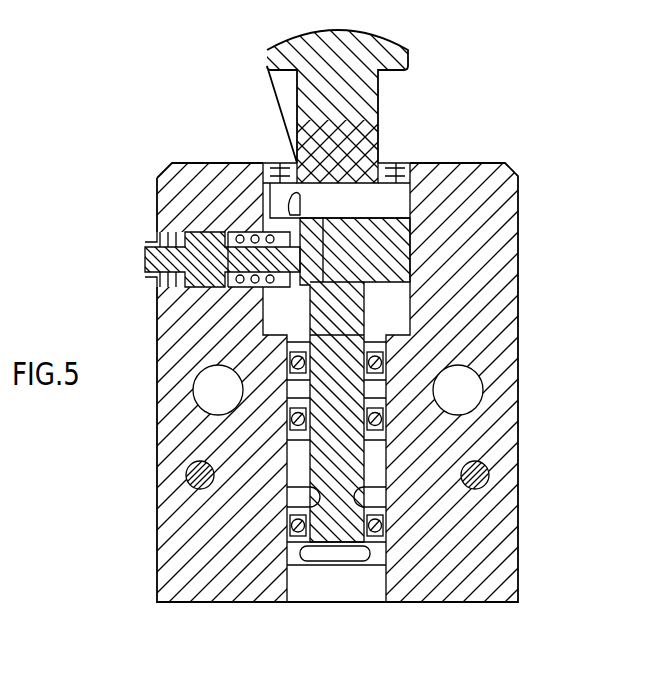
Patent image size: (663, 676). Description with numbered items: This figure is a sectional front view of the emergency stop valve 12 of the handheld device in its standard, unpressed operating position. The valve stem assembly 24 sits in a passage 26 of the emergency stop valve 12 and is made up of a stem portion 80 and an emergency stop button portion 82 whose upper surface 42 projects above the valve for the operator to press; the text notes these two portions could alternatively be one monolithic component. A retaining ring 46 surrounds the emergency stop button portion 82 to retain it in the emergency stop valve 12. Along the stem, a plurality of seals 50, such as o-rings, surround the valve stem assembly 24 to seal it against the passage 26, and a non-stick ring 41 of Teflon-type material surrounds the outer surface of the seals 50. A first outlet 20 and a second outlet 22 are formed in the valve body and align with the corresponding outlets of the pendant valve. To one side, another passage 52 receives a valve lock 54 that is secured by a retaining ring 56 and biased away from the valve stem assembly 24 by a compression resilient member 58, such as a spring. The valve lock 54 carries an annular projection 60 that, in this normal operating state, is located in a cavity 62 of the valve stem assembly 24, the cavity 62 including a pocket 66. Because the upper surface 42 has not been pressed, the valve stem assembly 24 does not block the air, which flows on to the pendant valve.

The emergency stop valve 12 is at (484, 81).
The first outlet 20 is at (207, 395).
The second outlet 22 is at (465, 393).
The valve stem assembly 24 is at (347, 322).
The passage 26 is at (388, 434).
The non-stick ring 41 is at (388, 422).
The upper surface 42 is at (340, 30).
The retaining ring 46 is at (397, 165).
The seals 50 is at (380, 533).
The passage 52 is at (207, 237).
The valve lock 54 is at (190, 237).
The retaining ring 56 is at (158, 240).
The compression resilient member 58 is at (220, 285).
The annular projection 60 is at (268, 178).
The cavity 62 is at (318, 215).
The pocket 66 is at (293, 192).
The stem portion 80 is at (337, 310).
The emergency stop button portion 82 is at (313, 103).